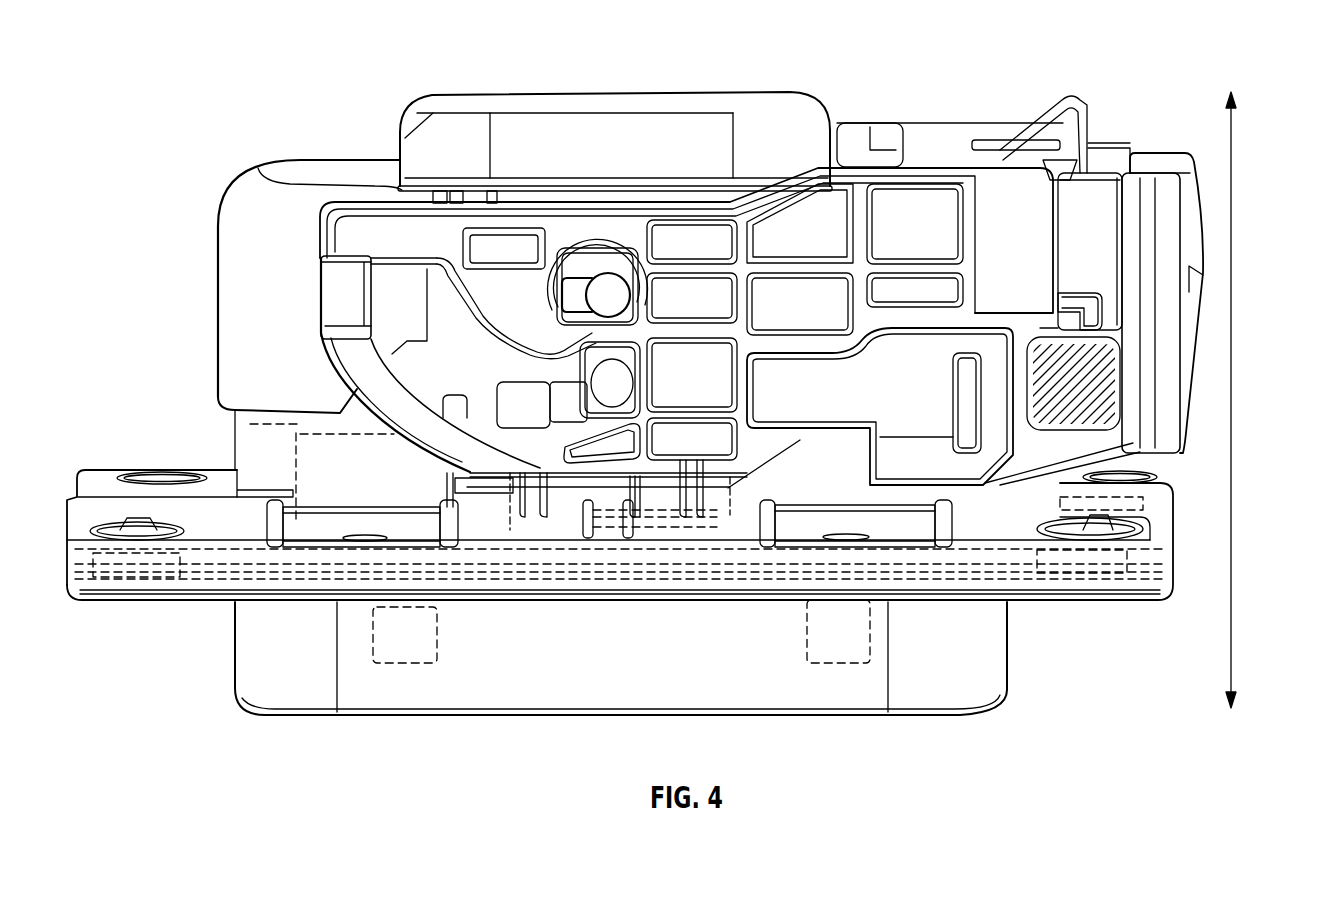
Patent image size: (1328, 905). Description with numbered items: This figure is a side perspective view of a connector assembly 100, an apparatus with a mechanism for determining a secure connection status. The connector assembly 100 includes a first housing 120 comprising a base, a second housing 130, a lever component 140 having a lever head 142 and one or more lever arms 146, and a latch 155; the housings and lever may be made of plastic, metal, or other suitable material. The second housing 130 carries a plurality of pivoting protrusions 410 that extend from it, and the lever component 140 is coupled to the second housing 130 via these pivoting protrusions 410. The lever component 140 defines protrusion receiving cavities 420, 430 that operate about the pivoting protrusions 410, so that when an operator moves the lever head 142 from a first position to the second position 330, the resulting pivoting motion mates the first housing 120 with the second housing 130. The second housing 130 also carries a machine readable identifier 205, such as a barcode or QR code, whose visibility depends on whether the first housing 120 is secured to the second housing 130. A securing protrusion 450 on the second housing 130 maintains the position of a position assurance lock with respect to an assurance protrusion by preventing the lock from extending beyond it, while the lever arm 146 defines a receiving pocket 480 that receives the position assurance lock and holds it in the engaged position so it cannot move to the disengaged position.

The connector assembly 100 is at (353, 88).
The first housing 120 is at (253, 742).
The second housing 130 is at (222, 168).
The lever component 140 is at (938, 110).
The lever head 142 is at (1163, 166).
The lever arm 146 is at (777, 182).
The latch 155 is at (1063, 124).
The machine readable identifier 205 is at (1103, 420).
The second position 330 is at (1233, 393).
The pivoting protrusions 410 is at (575, 292).
The protrusion receiving cavity 420 is at (545, 408).
The protrusion receiving cavity 430 is at (597, 240).
The securing protrusion 450 is at (1075, 300).
The receiving pocket 480 is at (768, 370).